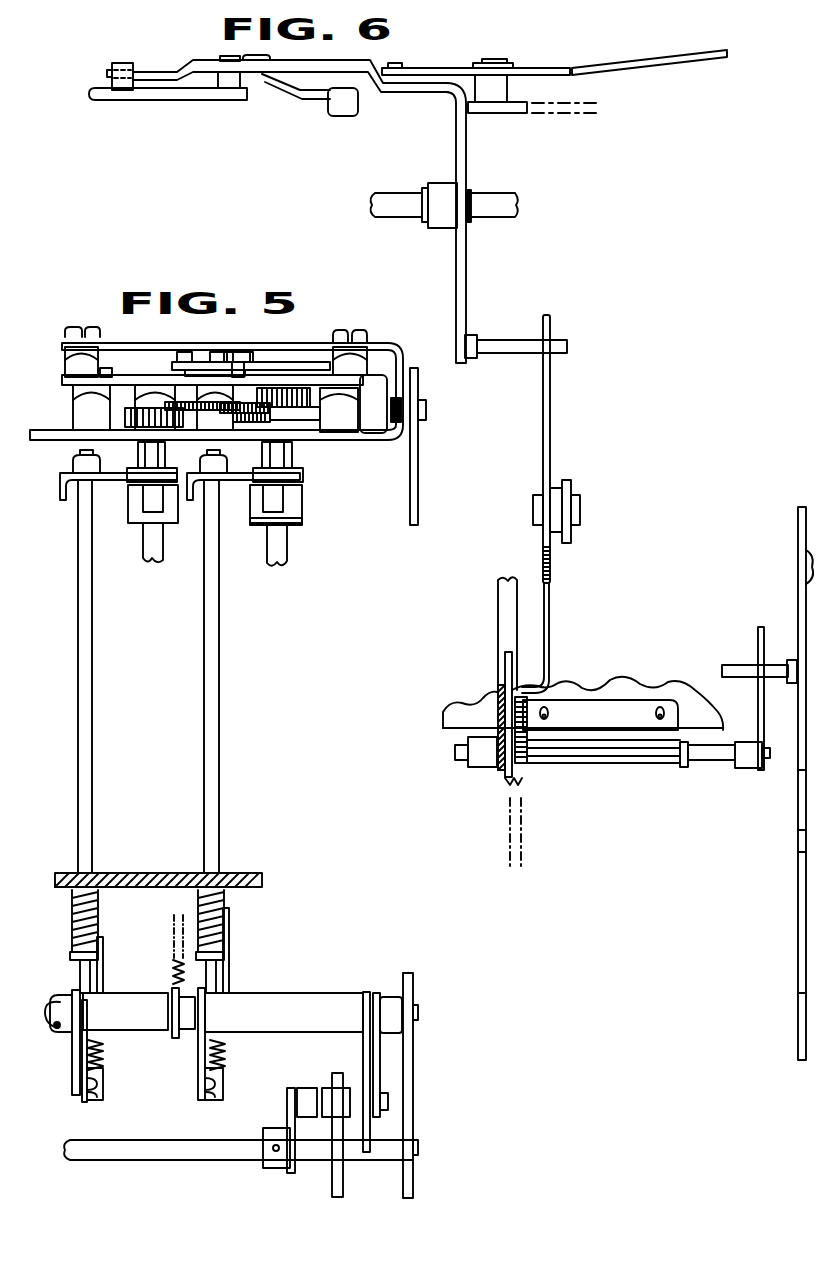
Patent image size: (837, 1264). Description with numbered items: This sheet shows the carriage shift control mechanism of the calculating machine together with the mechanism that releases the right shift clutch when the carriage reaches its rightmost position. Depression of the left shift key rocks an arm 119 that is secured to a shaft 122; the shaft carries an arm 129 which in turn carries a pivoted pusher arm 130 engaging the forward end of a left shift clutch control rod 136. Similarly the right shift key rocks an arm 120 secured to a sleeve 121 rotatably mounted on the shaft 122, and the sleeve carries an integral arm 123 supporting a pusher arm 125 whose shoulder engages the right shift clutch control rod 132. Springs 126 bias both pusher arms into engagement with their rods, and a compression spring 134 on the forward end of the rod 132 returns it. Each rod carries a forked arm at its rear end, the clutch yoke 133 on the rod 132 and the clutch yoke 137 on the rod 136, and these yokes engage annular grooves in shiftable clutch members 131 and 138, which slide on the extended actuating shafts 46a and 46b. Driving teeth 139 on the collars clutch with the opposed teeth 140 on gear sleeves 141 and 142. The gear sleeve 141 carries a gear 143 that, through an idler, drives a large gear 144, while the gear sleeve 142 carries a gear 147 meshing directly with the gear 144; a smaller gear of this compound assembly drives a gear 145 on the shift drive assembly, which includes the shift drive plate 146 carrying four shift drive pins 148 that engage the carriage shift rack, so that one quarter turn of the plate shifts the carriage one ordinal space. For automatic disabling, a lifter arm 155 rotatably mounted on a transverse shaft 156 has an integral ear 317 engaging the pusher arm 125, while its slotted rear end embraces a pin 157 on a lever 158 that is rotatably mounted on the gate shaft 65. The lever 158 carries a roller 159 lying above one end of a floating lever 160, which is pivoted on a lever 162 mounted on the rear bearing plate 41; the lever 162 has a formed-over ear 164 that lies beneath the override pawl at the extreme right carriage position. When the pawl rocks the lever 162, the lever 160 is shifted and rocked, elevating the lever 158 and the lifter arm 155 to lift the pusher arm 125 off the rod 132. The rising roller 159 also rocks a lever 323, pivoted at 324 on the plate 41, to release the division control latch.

In FIG. 6, the rear bearing plate 41 is at (198, 94).
In FIG. 6, the floating lever 160 is at (327, 67).
In FIG. 6, the lever 162 is at (302, 92).
In FIG. 6, the formed-over ear 164 is at (344, 100).
In FIG. 6, the roller 159 is at (417, 56).
In FIG. 6, the pivot 324 is at (501, 88).
In FIG. 6, the lever 323 is at (650, 62).
In FIG. 6, the lever 158 is at (463, 131).
In FIG. 6, the gate shaft 65 is at (492, 199).
In FIG. 6, the pin 157 is at (518, 342).
In FIG. 6, the lifter arm 155 is at (549, 421).
In FIG. 6, the transverse shaft 156 is at (579, 512).
In FIG. 6, the right shift clutch control rod 132 is at (505, 619).
In FIG. 5, the right shift clutch control rod 132 is at (213, 818).
In FIG. 6, the pusher arm 125 is at (505, 664).
In FIG. 5, the pusher arm 125 is at (212, 1102).
In FIG. 6, the arm 123 is at (498, 770).
In FIG. 5, the arm 123 is at (208, 1100).
In FIG. 6, the ear 317 is at (527, 692).
In FIG. 5, the shift drive pins 148 is at (169, 344).
In FIG. 5, the gear sleeve 142 is at (155, 393).
In FIG. 5, the gear 145 is at (222, 376).
In FIG. 5, the shift drive plate 146 is at (258, 366).
In FIG. 5, the gear 147 is at (125, 416).
In FIG. 5, the gear 143 is at (300, 398).
In FIG. 5, the gear sleeve 141 is at (292, 418).
In FIG. 5, the large gear 144 is at (265, 422).
In FIG. 5, the driving teeth 139 is at (203, 449).
In FIG. 5, the teeth 140 is at (270, 467).
In FIG. 5, the forked arm 137 is at (95, 481).
In FIG. 5, the shiftable clutch member 138 is at (149, 500).
In FIG. 5, the extended actuating shaft 46b is at (146, 552).
In FIG. 5, the shiftable clutch member 131 is at (281, 504).
In FIG. 5, the forked arm 133 is at (300, 522).
In FIG. 5, the extended actuating shaft 46a is at (287, 546).
In FIG. 5, the left shift clutch control rod 136 is at (86, 818).
In FIG. 5, the compression spring 134 is at (207, 907).
In FIG. 5, the sleeve 121 is at (320, 997).
In FIG. 5, the shaft 122 is at (47, 1013).
In FIG. 5, the arm 129 is at (73, 1097).
In FIG. 5, the pusher arm 130 is at (88, 1102).
In FIG. 5, the springs 126 is at (224, 1052).
In FIG. 5, the arm 119 is at (365, 1052).
In FIG. 5, the arm 120 is at (367, 1079).